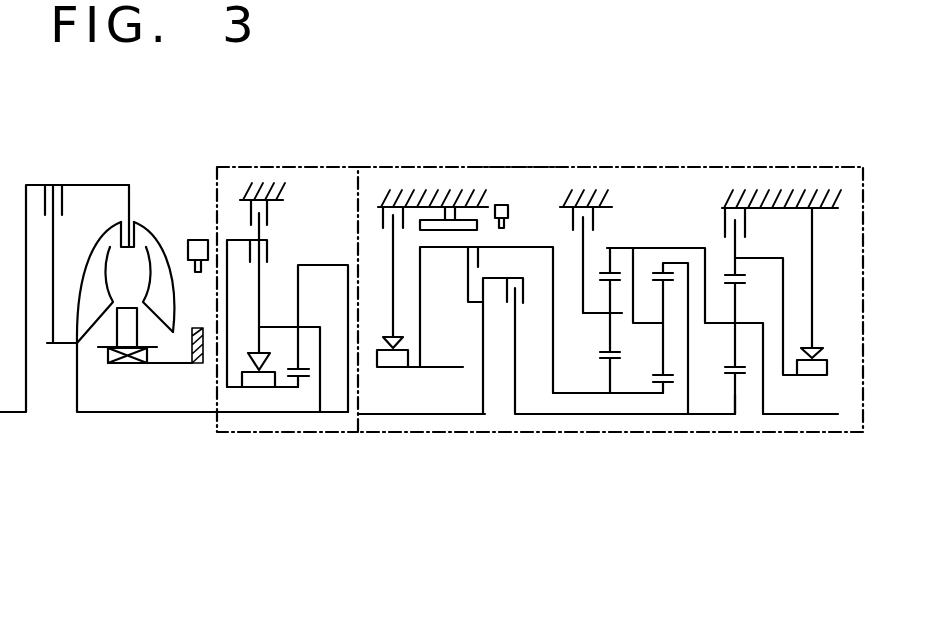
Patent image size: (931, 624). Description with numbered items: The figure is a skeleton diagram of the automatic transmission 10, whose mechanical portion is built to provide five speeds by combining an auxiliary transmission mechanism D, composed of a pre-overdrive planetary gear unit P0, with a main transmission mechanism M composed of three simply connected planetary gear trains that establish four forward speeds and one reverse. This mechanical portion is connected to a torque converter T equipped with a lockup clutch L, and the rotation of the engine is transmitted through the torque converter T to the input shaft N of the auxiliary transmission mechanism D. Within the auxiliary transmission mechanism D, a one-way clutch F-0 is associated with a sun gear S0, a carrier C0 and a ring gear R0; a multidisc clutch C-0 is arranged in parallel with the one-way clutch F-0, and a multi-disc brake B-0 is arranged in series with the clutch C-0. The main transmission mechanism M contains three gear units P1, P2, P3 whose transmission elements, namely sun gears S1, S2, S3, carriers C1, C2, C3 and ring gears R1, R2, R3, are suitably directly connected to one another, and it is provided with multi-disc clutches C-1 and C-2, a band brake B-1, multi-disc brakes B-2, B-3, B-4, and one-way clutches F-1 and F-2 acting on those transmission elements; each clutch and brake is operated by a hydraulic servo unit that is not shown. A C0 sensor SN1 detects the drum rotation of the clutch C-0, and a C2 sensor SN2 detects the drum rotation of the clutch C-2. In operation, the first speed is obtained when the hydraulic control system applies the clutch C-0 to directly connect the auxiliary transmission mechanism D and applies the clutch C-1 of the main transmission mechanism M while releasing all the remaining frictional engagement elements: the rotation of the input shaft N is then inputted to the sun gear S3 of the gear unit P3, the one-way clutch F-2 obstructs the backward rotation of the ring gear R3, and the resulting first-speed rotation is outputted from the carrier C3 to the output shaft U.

The lockup clutch L is at (53, 186).
The torque converter T is at (139, 185).
The input shaft N is at (133, 413).
The C0 sensor SN1 is at (188, 246).
The multidisc clutch C-0 is at (249, 256).
The multi-disc brake B-0 is at (250, 214).
The ring gear R0 is at (296, 280).
The carrier C0 is at (320, 332).
The sun gear S0 is at (311, 380).
The overdrive planetary pinion P0 is at (281, 391).
The one-way clutch F-0 is at (251, 381).
The auxiliary transmission mechanism D is at (335, 433).
The automatic transmission 10 is at (515, 164).
The main transmission mechanism M is at (672, 163).
The multi-disc brake B-2 is at (384, 216).
The band brake B-1 is at (458, 215).
The C2 sensor SN2 is at (503, 205).
The multi-disc brake B-3 is at (570, 222).
The multi-disc brake B-4 is at (741, 209).
The one-way clutch F-1 is at (394, 369).
The one-way clutch F-2 is at (806, 373).
The multi-disc clutch C-1 is at (527, 298).
The multi-disc clutch C-2 is at (467, 256).
The ring gear R1 is at (618, 239).
The carrier C1 is at (594, 317).
The sun gear S1 is at (600, 356).
The gear unit P1 is at (600, 398).
The ring gear R2 is at (665, 243).
The carrier C2 is at (642, 322).
The sun gear S2 is at (655, 376).
The gear unit P2 is at (662, 400).
The ring gear R3 is at (726, 277).
The carrier C3 is at (751, 320).
The sun gear S3 is at (725, 372).
The gear unit P3 is at (738, 401).
The output shaft U is at (821, 422).